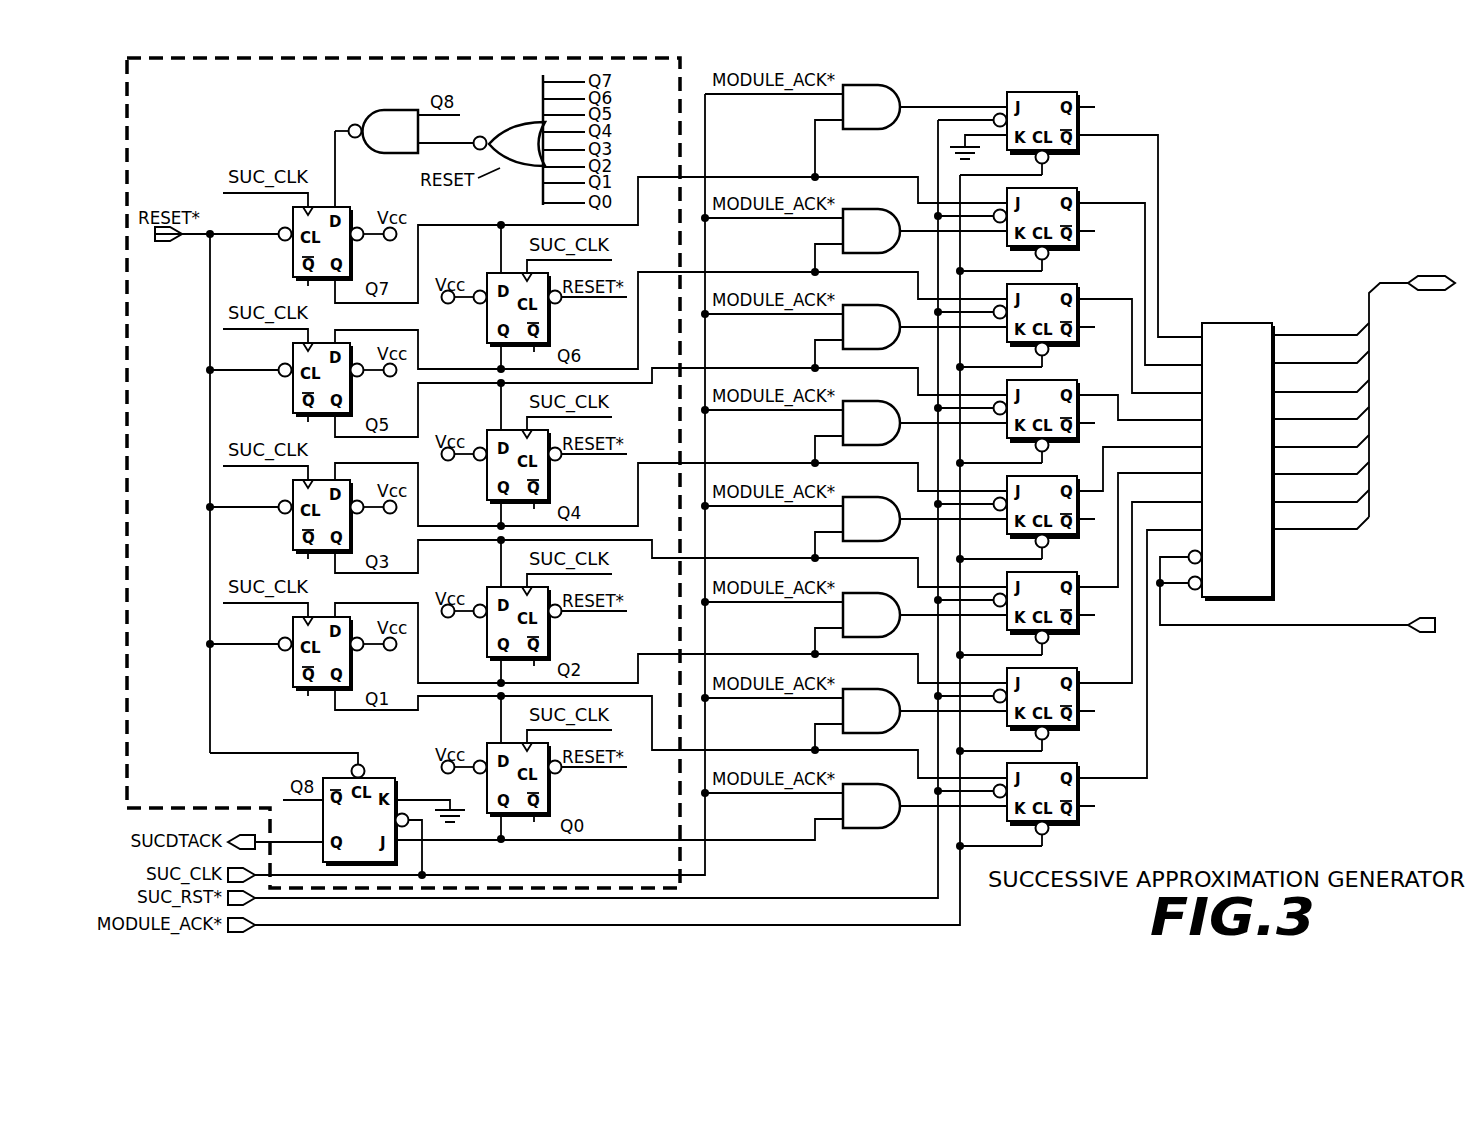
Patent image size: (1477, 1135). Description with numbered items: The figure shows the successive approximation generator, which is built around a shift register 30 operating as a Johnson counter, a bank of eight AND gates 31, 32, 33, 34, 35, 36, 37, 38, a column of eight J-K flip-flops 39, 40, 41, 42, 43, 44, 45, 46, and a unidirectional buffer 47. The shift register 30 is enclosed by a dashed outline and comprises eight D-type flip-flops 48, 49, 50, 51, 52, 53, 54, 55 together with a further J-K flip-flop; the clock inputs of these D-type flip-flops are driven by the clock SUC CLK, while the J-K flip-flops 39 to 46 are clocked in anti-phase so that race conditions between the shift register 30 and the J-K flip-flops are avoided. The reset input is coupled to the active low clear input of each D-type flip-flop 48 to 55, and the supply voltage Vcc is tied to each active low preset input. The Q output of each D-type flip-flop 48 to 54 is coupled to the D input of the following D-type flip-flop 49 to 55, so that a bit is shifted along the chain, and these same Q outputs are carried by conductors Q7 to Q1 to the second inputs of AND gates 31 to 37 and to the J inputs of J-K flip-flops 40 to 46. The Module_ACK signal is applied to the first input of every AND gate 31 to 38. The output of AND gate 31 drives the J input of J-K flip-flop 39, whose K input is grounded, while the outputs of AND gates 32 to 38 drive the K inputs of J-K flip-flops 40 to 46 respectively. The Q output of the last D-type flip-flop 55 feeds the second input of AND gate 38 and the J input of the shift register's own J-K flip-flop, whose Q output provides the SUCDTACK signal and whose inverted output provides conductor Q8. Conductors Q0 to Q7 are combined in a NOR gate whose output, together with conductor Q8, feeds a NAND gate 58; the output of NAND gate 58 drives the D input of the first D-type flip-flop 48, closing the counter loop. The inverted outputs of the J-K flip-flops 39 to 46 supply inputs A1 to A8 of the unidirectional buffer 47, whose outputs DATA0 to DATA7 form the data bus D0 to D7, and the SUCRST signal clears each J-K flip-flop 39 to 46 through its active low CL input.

The shift register 30 is at (170, 727).
The AND gate 31 is at (883, 118).
The AND gate 32 is at (883, 242).
The AND gate 33 is at (883, 338).
The AND gate 34 is at (883, 434).
The AND gate 35 is at (883, 530).
The AND gate 36 is at (883, 626).
The AND gate 37 is at (883, 722).
The AND gate 38 is at (883, 817).
The J-K flip-flop 39 is at (1057, 92).
The J-K flip-flop 40 is at (1057, 188).
The J-K flip-flop 41 is at (1057, 284).
The J-K flip-flop 42 is at (1057, 380).
The J-K flip-flop 43 is at (1057, 476).
The J-K flip-flop 44 is at (1057, 572).
The J-K flip-flop 45 is at (1057, 668).
The J-K flip-flop 46 is at (1057, 763).
The unidirectional buffer 47 is at (1254, 588).
The D-type flip-flop 48 is at (293, 250).
The D-type flip-flop 49 is at (499, 273).
The D-type flip-flop 50 is at (293, 386).
The D-type flip-flop 51 is at (499, 430).
The D-type flip-flop 52 is at (293, 523).
The D-type flip-flop 53 is at (499, 587).
The D-type flip-flop 54 is at (293, 660).
The D-type flip-flop 55 is at (499, 743).
The NAND gate 58 is at (405, 144).